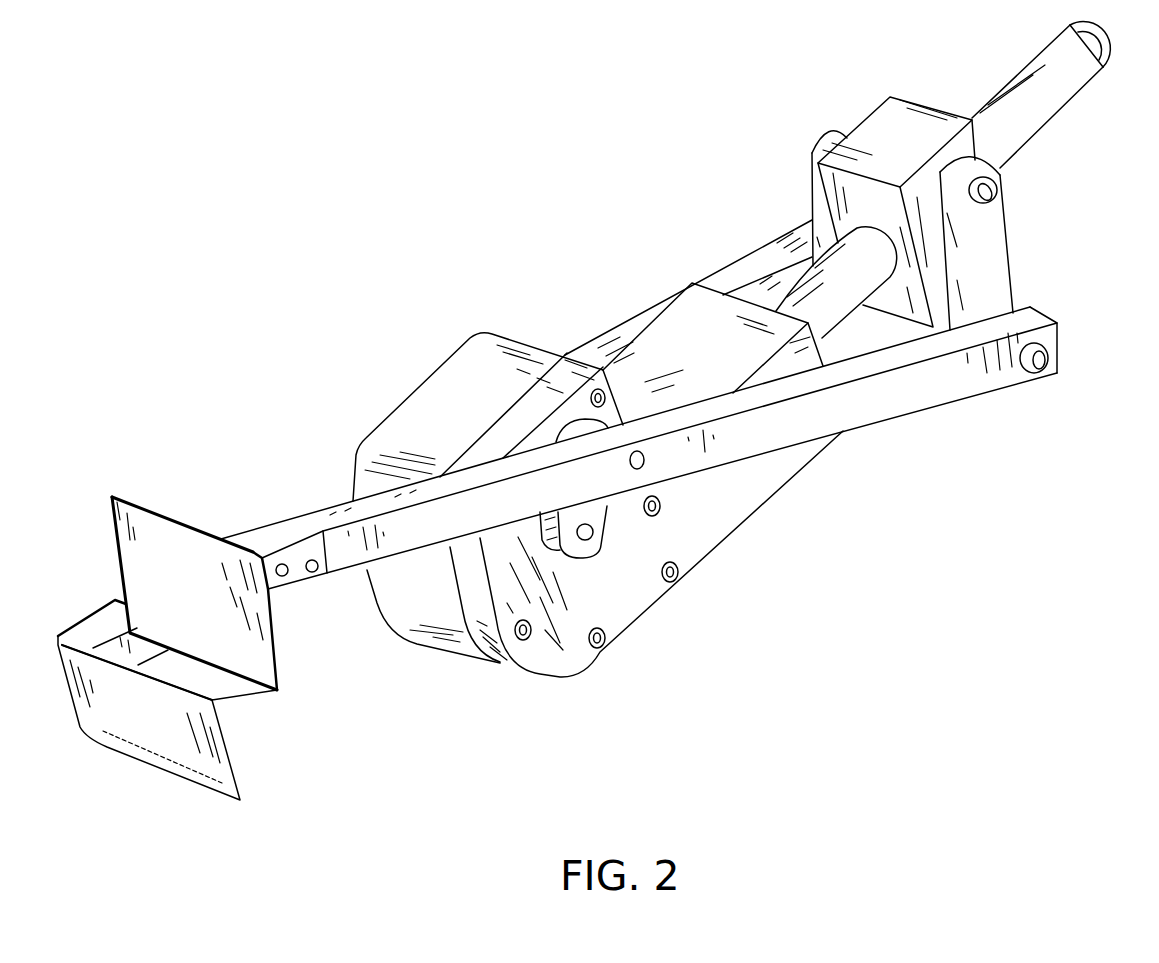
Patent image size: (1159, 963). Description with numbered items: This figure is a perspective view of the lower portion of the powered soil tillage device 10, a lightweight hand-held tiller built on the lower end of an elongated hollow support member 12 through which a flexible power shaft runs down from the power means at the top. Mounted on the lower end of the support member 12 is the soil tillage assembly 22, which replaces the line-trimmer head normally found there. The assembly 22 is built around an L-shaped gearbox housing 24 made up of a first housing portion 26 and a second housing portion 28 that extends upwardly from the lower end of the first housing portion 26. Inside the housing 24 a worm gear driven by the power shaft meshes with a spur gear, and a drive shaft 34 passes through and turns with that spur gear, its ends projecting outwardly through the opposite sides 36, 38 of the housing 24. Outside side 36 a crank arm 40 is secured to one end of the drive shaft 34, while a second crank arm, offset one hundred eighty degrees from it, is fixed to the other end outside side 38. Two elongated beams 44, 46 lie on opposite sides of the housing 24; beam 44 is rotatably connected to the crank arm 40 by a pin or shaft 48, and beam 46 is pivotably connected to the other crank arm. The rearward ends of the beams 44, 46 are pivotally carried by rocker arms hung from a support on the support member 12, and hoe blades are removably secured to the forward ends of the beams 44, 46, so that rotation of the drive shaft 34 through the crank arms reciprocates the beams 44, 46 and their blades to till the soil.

The powered soil tillage device 10 is at (718, 183).
The elongated hollow support member 12 is at (1060, 132).
The soil tillage assembly 22 is at (529, 315).
The gearbox housing 24 is at (767, 533).
The first housing portion 26 is at (748, 470).
The second housing portion 28 is at (457, 393).
The drive shaft 34 is at (592, 537).
The side of housing 36 is at (553, 670).
The side of housing 38 is at (365, 577).
The crank arm 40 is at (577, 655).
The elongated beam 44 is at (913, 398).
The elongated beam 46 is at (635, 310).
The pin or shaft 48 is at (645, 463).